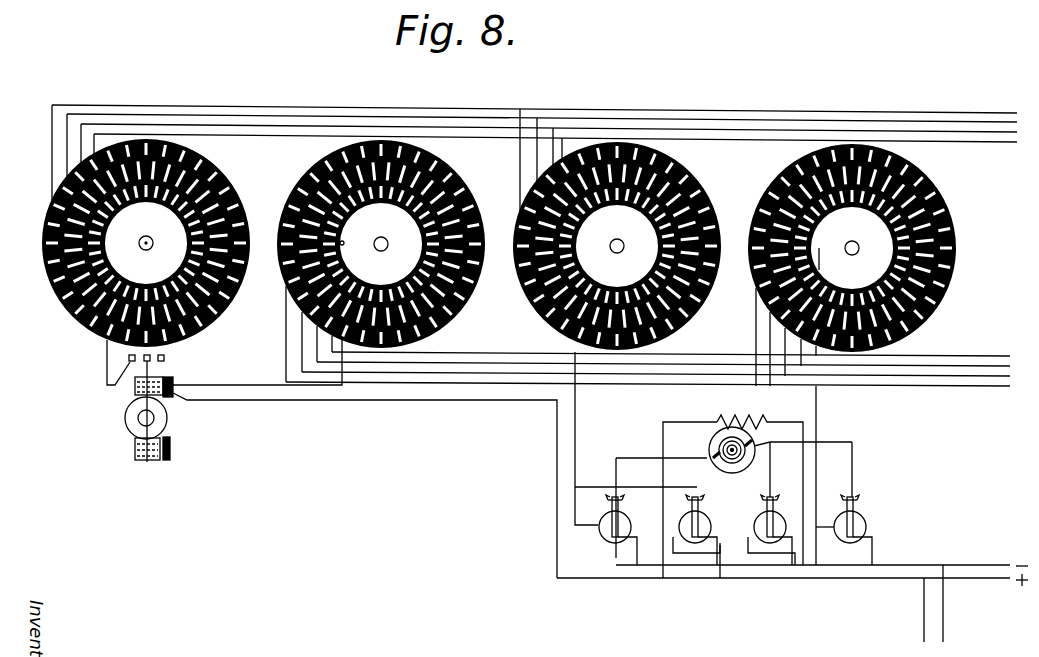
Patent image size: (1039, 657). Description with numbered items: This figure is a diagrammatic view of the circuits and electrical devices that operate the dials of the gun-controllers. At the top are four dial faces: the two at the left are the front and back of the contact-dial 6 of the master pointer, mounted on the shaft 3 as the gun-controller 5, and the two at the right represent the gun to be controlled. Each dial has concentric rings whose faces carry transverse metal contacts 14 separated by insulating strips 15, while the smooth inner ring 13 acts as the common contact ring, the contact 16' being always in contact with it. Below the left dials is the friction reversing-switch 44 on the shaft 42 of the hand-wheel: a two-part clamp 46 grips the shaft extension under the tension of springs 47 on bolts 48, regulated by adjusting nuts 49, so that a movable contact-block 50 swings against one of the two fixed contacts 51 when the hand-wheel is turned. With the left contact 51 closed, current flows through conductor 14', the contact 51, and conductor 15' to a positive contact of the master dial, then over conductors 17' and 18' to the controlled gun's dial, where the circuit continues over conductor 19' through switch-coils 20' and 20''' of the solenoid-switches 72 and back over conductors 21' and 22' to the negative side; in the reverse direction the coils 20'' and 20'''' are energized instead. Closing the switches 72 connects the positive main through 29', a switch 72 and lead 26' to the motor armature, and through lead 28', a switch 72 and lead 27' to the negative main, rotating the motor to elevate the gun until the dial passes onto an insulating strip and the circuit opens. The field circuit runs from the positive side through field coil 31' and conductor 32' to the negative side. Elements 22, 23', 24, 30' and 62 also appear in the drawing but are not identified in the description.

The shaft 3 is at (734, 247).
The gun-controller 5 is at (156, 243).
The contact-dial 6 is at (238, 288).
The inner ring 13 is at (500, 259).
The transverse metal contacts 14 is at (511, 283).
The conductor 14' is at (542, 478).
The insulating strips 15 is at (382, 308).
The conductor 15' is at (81, 352).
The contact 16' is at (123, 227).
The conductor 17' is at (481, 143).
The conductor 18' is at (602, 114).
The conductor 19' is at (593, 438).
The switch-coil 20' is at (561, 546).
The switch-coil 20'' is at (679, 589).
The switch-coil 20''' is at (733, 589).
The switch-coil 20'''' is at (847, 546).
The conductor 21' is at (792, 600).
The contact 22 is at (771, 436).
The conductor 22' is at (748, 593).
The armature 23' is at (753, 529).
The magnet coil 24 is at (599, 525).
The lead 26' is at (818, 459).
The lead 27' is at (674, 572).
The lead 28' is at (663, 500).
The conductor 29' is at (817, 594).
The conductor 30' is at (786, 572).
The field coil 31' is at (760, 478).
The conductor 32' is at (846, 475).
The shaft 42 is at (133, 427).
The friction reversing-switch 44 is at (135, 380).
The two-part clamp 46 is at (167, 397).
The springs 47 is at (173, 393).
The bolts 48 is at (137, 393).
The adjusting nuts 49 is at (172, 384).
The movable contact-block 50 is at (150, 356).
The fixed contacts 51 is at (129, 358).
The coil 62 is at (709, 444).
The solenoid-switches 72 is at (778, 508).